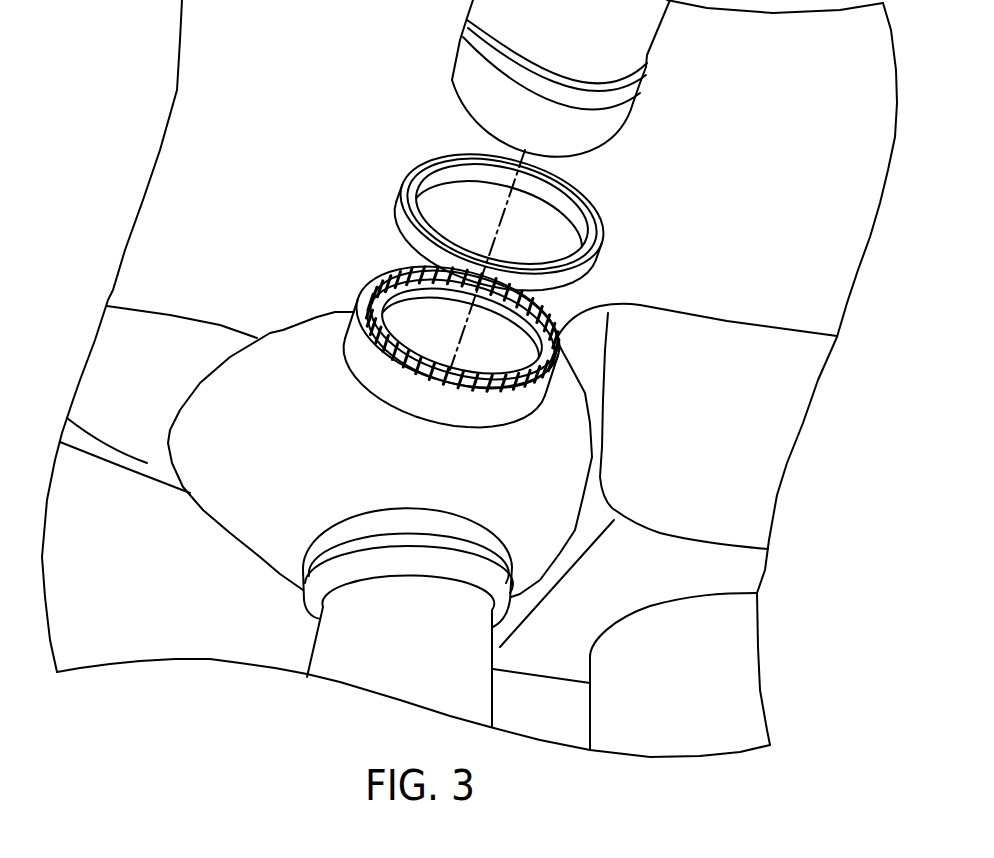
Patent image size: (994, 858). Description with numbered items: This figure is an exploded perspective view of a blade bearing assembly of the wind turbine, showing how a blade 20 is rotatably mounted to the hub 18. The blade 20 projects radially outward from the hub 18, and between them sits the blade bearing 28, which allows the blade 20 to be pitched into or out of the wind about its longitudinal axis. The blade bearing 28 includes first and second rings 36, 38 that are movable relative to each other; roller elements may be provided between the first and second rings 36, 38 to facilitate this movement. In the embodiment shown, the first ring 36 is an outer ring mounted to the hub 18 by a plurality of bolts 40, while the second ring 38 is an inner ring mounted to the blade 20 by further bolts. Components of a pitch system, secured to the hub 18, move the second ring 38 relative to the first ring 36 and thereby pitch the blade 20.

The hub 18 is at (290, 333).
The blade 20 is at (608, 121).
The blade bearing 28 is at (484, 204).
The first ring 36 is at (603, 243).
The second ring 38 is at (428, 173).
The bolts 40 is at (505, 389).